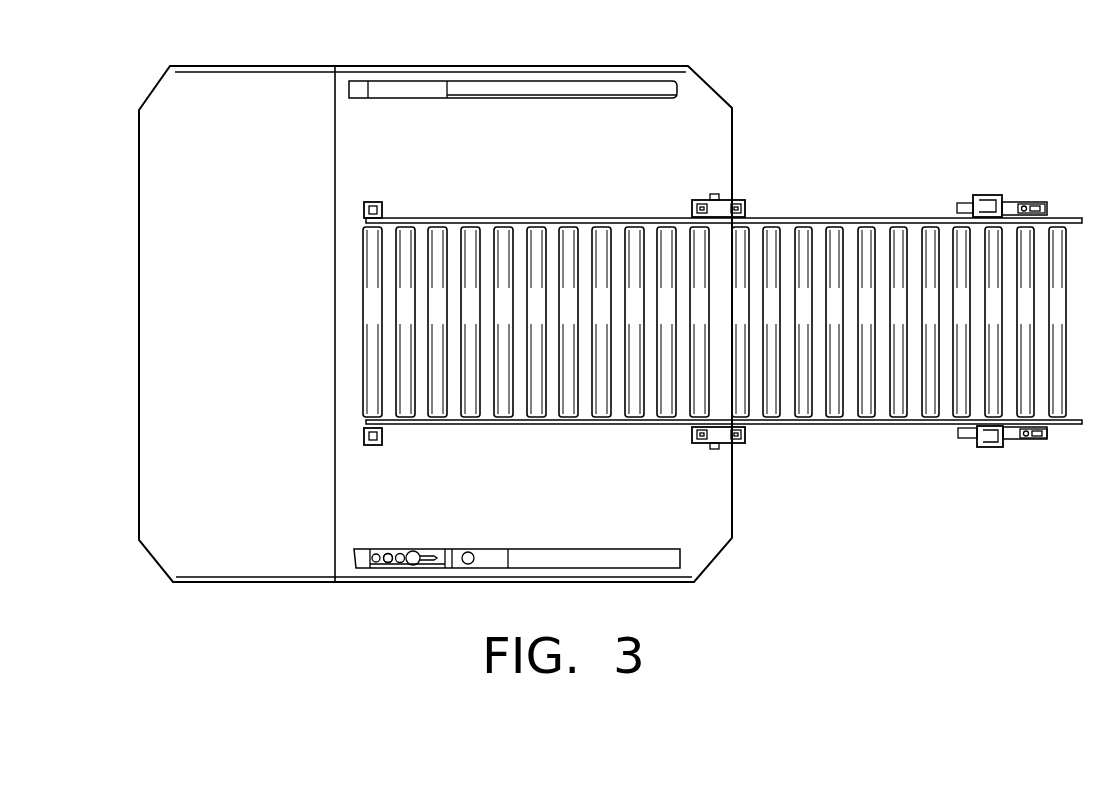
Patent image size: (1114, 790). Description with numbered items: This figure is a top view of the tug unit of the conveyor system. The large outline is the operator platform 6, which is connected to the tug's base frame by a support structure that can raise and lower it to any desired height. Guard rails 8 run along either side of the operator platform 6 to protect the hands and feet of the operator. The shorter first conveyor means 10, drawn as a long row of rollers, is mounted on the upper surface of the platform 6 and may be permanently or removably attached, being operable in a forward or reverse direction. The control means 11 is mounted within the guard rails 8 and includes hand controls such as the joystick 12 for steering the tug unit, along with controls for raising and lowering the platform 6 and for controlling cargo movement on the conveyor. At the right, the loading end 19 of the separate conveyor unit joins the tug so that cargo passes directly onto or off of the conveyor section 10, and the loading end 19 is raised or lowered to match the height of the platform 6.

The operator platform 6 is at (240, 292).
The guard rails 8 is at (643, 89).
The first conveyor means 10 is at (601, 226).
The control means 11 is at (388, 552).
The joystick 12 is at (414, 551).
The loading end 19 is at (1092, 183).